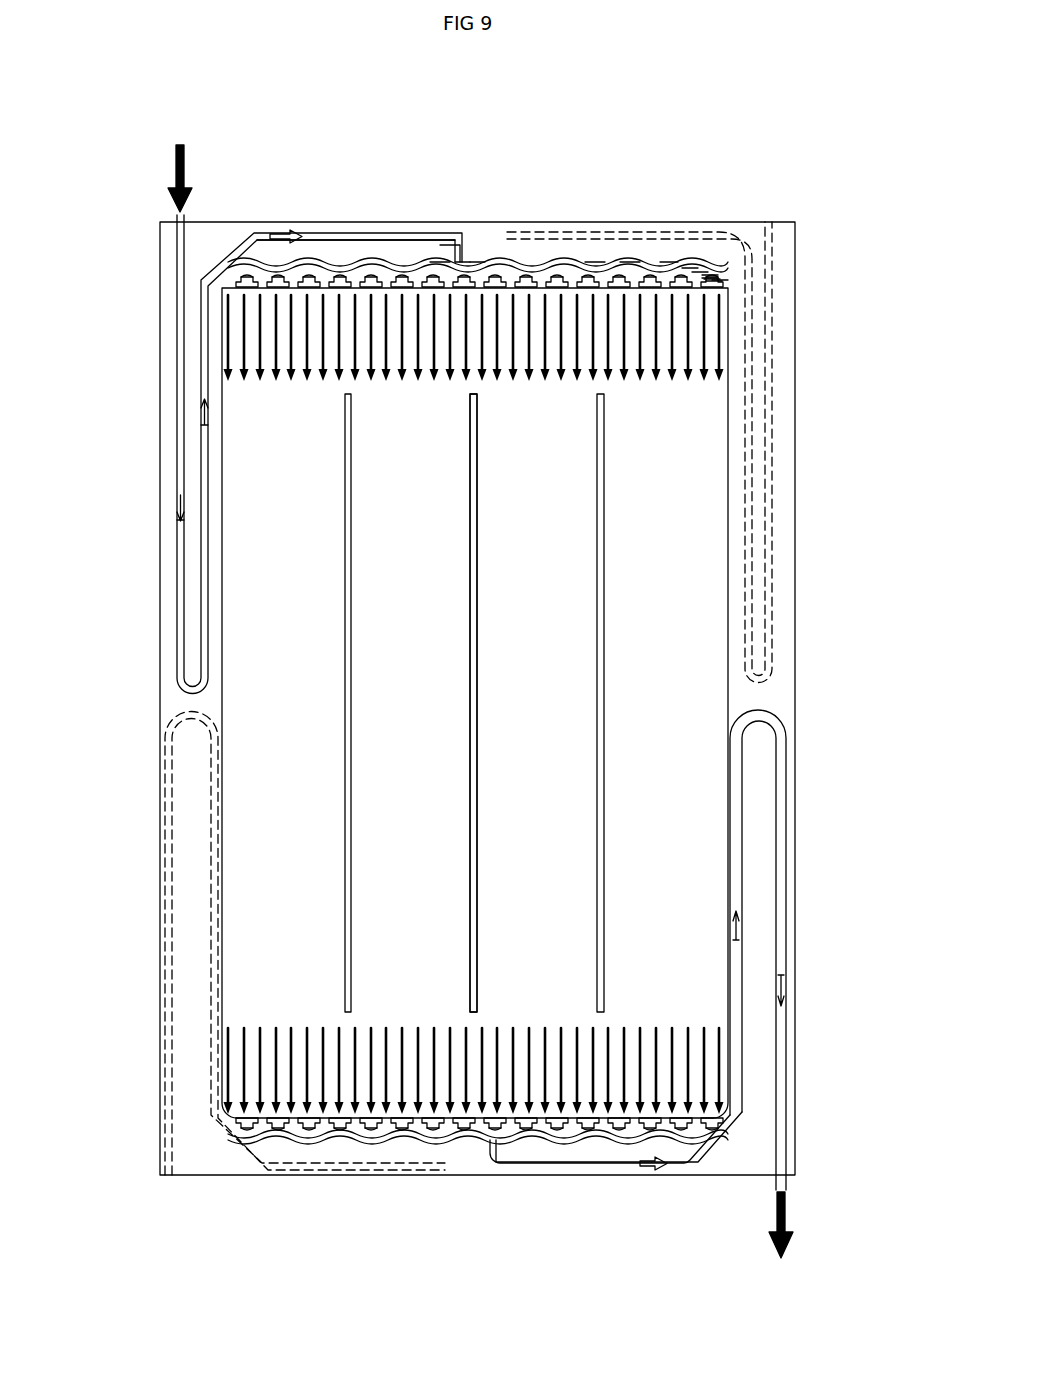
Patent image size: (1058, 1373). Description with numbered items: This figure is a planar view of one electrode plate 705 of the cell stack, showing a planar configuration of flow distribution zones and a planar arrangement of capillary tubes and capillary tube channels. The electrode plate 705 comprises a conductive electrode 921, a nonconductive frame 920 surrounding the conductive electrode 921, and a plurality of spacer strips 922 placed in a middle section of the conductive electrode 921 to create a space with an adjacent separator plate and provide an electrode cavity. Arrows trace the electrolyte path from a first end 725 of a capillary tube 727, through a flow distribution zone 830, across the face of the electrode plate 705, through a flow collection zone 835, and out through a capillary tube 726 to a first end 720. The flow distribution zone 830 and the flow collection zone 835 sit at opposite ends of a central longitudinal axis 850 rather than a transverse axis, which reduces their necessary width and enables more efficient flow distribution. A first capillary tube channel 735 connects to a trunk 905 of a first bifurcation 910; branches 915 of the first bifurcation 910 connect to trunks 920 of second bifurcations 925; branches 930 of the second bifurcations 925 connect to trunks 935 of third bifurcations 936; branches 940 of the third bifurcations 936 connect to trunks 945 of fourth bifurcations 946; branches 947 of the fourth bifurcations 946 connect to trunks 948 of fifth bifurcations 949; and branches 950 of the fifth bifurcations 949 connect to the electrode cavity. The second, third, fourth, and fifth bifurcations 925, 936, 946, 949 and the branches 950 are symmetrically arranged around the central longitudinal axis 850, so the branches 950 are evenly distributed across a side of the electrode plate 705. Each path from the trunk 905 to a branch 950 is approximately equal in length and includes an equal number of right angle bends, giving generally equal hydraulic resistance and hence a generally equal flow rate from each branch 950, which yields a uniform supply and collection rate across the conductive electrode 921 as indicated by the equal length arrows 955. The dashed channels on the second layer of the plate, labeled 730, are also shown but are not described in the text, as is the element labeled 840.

The electrode plate 705 is at (124, 246).
The first end 720 is at (775, 1183).
The first end 725 is at (180, 215).
The capillary tube 726 is at (777, 1112).
The capillary tube 727 is at (180, 325).
The return channel 730 is at (775, 540).
The first capillary tube channel 735 is at (350, 240).
The flow distribution zone 830 is at (337, 262).
The flow collection zone 835 is at (468, 1165).
The conduit bend 840 is at (450, 240).
The central longitudinal axis 850 is at (470, 590).
The trunk 905 is at (460, 262).
The first bifurcation 910 is at (440, 262).
The branches 915 is at (475, 262).
The trunks 920 is at (603, 262).
The conductive electrode 921 is at (230, 765).
The spacer strips 922 is at (600, 835).
The second bifurcations 925 is at (595, 262).
The branches 930 is at (628, 262).
The trunks 935 is at (668, 262).
The third bifurcations 936 is at (690, 268).
The branches 940 is at (700, 272).
The trunks 945 is at (710, 275).
The fourth bifurcations 946 is at (710, 278).
The branches 947 is at (712, 279).
The trunks 948 is at (714, 281).
The fifth bifurcations 949 is at (720, 280).
The branches 950 is at (720, 285).
The equal length arrows 955 is at (255, 345).